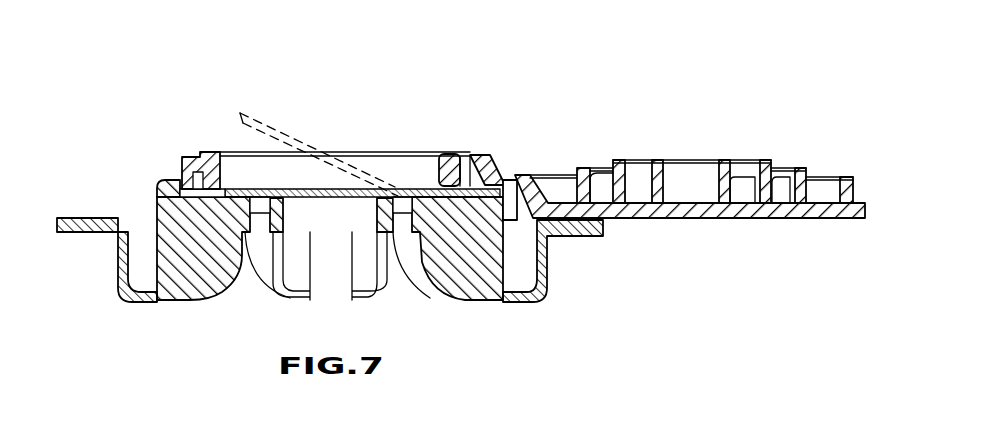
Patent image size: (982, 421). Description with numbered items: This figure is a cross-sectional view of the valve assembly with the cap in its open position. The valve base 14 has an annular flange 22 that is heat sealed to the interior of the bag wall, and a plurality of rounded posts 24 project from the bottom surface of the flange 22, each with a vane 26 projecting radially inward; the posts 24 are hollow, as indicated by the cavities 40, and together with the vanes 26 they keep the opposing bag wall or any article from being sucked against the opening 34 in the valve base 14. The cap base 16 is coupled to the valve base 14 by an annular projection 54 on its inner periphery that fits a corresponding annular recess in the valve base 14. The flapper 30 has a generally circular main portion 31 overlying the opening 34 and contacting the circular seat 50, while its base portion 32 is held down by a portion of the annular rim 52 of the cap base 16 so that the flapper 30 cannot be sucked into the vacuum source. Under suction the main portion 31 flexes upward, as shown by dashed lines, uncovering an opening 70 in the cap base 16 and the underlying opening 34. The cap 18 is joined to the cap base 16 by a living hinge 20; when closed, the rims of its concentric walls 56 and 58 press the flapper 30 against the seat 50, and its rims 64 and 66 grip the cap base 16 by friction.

The valve base 14 is at (128, 297).
The cap base 16 is at (163, 183).
The cap 18 is at (737, 220).
The living hinge 20 is at (500, 178).
The annular flange 22 is at (60, 233).
The rounded posts 24 is at (398, 302).
The vanes 26 is at (306, 284).
The flapper 30 is at (221, 154).
The main portion 31 is at (254, 112).
The base portion 32 is at (478, 183).
The opening 34 is at (366, 194).
The cavities 40 is at (528, 272).
The seat 50 is at (264, 198).
The annular rim 52 is at (471, 183).
The annular projection 54 is at (170, 207).
The wall 56 is at (665, 165).
The wall 58 is at (770, 162).
The rim 64 is at (803, 168).
The rim 66 is at (852, 177).
The opening 70 is at (444, 180).